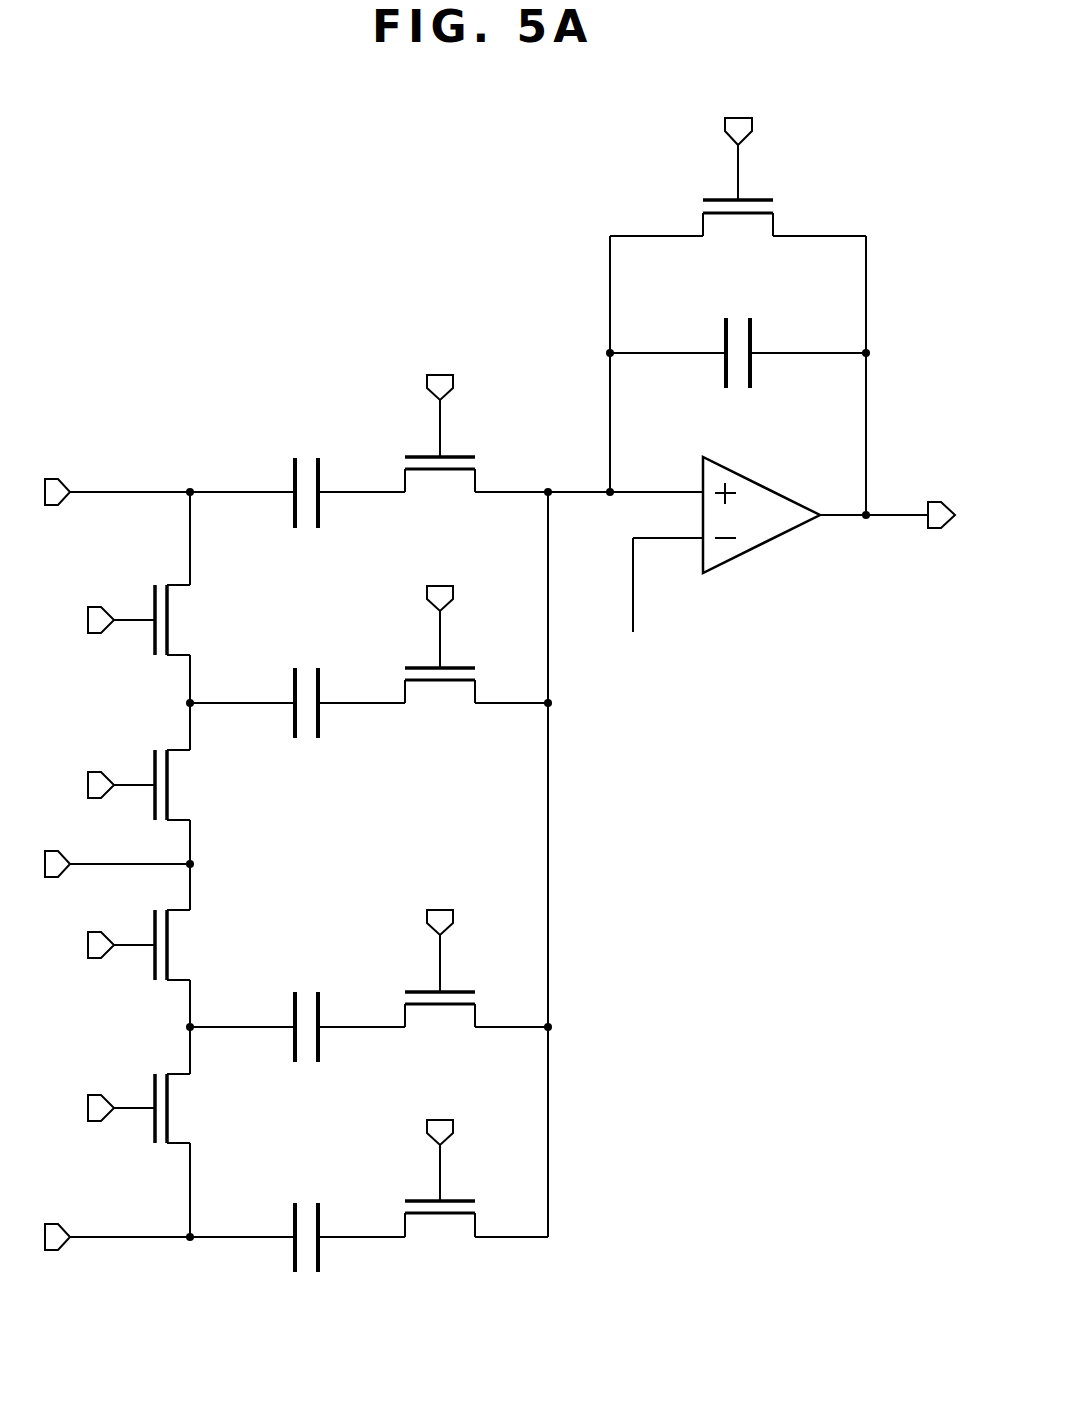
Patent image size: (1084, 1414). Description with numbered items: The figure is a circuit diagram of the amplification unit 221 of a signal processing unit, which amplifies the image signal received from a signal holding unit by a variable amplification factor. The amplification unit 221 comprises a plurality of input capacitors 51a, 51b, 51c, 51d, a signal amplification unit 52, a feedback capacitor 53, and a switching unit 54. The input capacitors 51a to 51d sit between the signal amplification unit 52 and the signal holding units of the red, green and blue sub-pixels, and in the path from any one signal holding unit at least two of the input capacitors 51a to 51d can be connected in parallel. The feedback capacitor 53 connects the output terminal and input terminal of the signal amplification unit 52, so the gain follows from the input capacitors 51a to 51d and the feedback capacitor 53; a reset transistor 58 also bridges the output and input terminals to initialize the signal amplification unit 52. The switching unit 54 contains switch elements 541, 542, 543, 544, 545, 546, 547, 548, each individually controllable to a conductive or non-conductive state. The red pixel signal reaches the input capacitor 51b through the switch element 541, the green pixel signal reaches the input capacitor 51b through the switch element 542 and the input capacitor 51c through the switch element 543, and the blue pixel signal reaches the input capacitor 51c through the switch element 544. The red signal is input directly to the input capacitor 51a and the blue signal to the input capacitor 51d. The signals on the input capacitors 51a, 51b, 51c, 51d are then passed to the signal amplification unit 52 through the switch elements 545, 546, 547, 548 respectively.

The amplification unit 221 is at (206, 190).
The input capacitor 51a is at (302, 452).
The input capacitor 51b is at (302, 662).
The input capacitor 51c is at (302, 987).
The input capacitor 51d is at (302, 1198).
The signal amplification unit 52 is at (763, 546).
The feedback capacitor 53 is at (772, 328).
The switching unit 54 is at (738, 952).
The reset transistor 58 is at (786, 205).
The switch element 541 is at (147, 596).
The switch element 542 is at (147, 756).
The switch element 543 is at (147, 978).
The switch element 544 is at (147, 1141).
The switch element 545 is at (405, 447).
The switch element 546 is at (405, 658).
The switch element 547 is at (405, 983).
The switch element 548 is at (405, 1192).